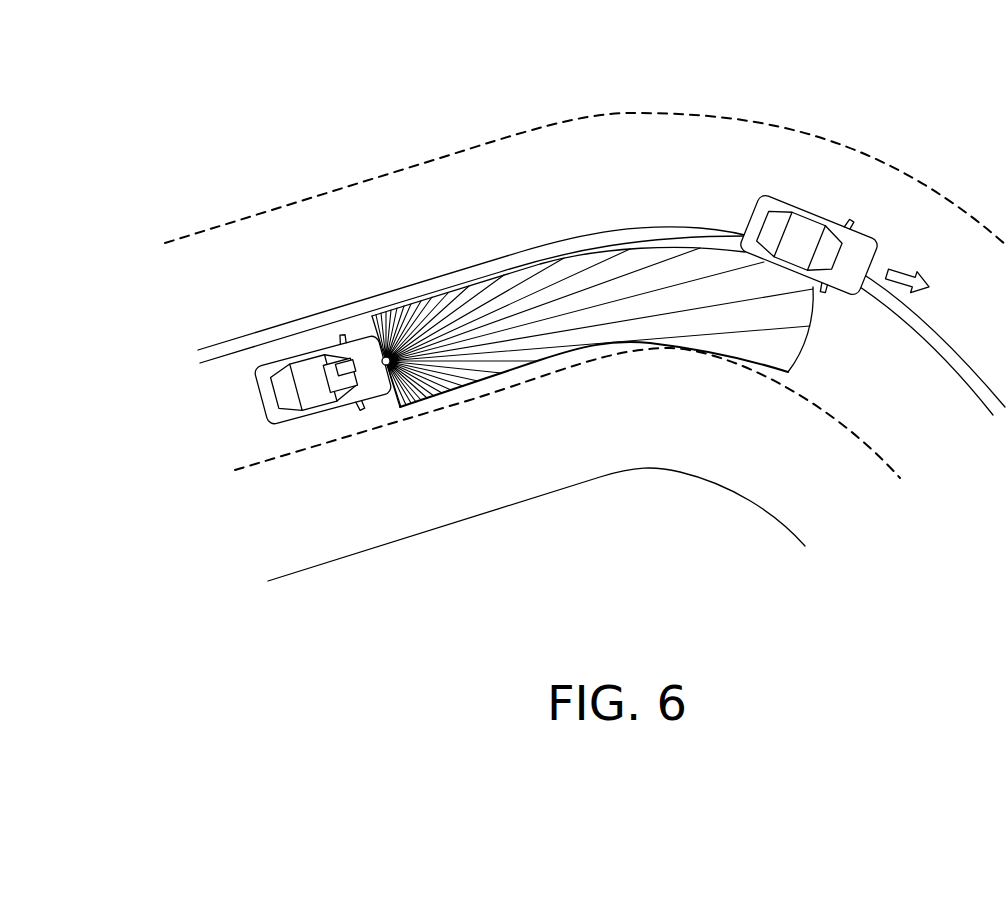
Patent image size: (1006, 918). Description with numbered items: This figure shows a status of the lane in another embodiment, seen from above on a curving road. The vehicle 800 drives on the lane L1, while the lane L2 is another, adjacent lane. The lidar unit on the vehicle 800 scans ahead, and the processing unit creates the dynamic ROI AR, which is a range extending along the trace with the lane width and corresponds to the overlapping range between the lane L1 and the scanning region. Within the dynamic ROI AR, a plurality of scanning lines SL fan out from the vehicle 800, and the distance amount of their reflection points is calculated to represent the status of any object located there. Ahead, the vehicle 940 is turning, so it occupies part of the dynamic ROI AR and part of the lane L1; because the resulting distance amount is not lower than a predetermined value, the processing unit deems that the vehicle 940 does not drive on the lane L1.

The vehicle 800 is at (272, 373).
The vehicle 940 is at (767, 204).
The dynamic ROI AR is at (485, 282).
The scanning line SL is at (592, 350).
The lane L1 is at (205, 426).
The lane L2 is at (176, 313).